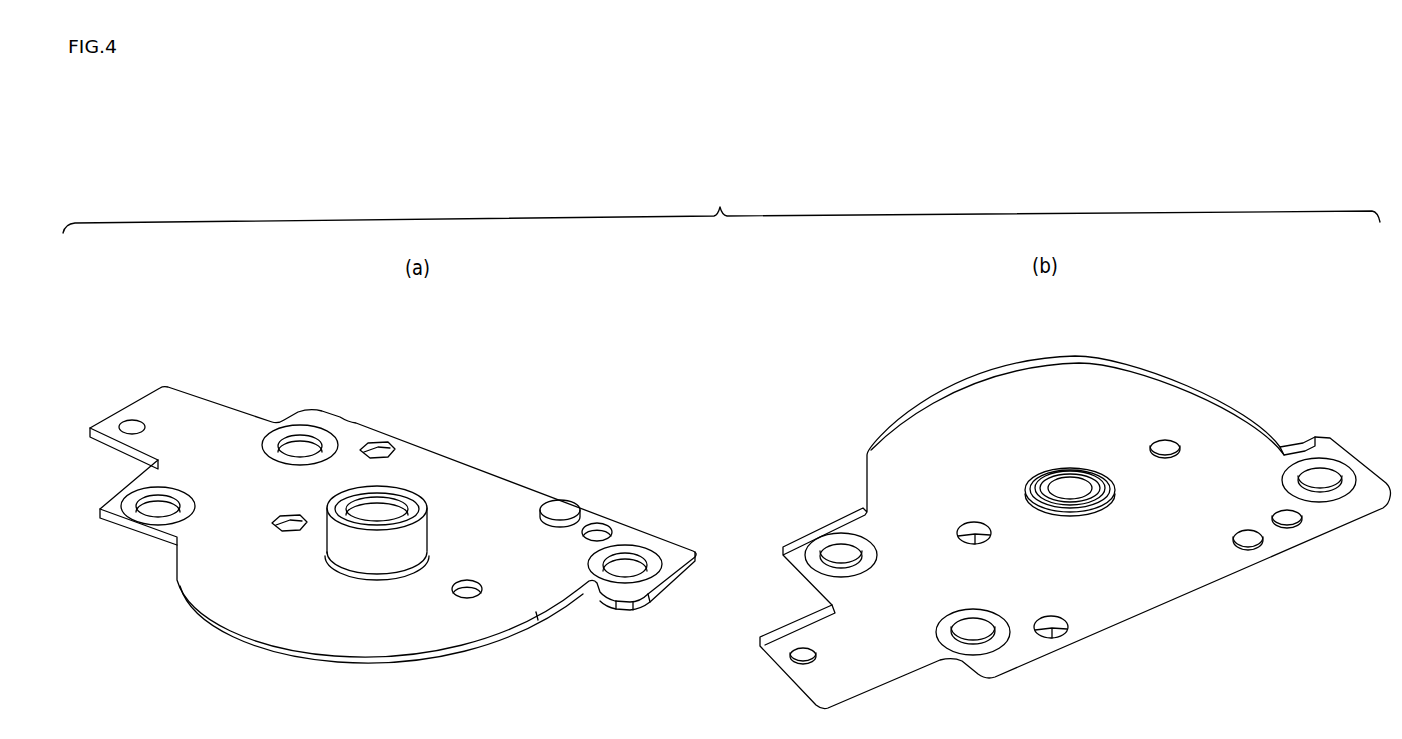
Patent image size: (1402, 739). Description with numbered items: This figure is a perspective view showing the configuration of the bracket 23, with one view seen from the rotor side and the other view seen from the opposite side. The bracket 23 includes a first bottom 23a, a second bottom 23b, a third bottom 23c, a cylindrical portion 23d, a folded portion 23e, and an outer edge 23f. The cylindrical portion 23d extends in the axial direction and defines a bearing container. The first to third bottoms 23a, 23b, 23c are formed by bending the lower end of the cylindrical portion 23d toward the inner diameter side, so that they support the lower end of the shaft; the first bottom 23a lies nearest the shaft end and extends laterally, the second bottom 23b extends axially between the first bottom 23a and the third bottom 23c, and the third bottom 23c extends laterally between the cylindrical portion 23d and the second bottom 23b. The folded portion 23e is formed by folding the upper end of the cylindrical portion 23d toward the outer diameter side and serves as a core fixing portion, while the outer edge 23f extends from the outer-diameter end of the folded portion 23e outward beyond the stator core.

The bracket 23 is at (573, 418).
The first bottom 23a is at (1065, 487).
The second bottom 23b is at (1078, 465).
The third bottom 23c is at (1102, 472).
The cylindrical portion 23d is at (382, 505).
The folded portion 23e is at (398, 540).
The outer edge 23f is at (1215, 460).